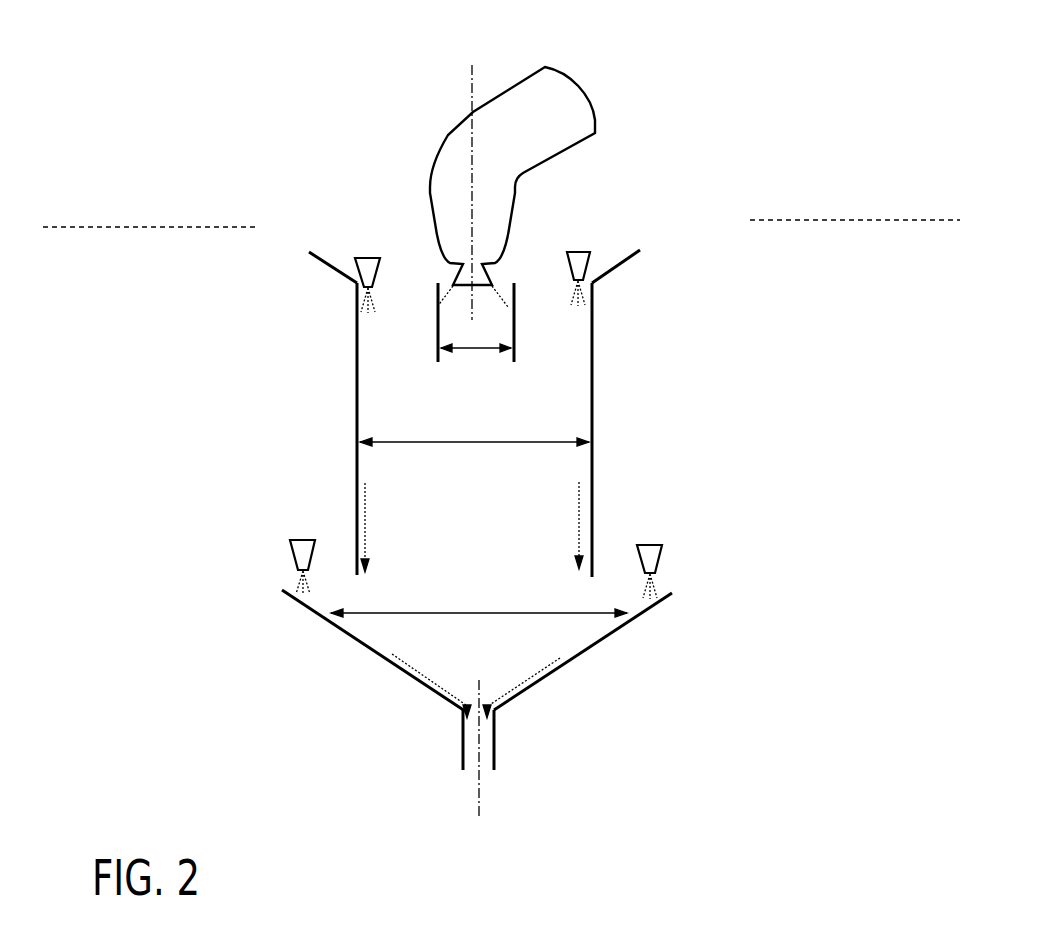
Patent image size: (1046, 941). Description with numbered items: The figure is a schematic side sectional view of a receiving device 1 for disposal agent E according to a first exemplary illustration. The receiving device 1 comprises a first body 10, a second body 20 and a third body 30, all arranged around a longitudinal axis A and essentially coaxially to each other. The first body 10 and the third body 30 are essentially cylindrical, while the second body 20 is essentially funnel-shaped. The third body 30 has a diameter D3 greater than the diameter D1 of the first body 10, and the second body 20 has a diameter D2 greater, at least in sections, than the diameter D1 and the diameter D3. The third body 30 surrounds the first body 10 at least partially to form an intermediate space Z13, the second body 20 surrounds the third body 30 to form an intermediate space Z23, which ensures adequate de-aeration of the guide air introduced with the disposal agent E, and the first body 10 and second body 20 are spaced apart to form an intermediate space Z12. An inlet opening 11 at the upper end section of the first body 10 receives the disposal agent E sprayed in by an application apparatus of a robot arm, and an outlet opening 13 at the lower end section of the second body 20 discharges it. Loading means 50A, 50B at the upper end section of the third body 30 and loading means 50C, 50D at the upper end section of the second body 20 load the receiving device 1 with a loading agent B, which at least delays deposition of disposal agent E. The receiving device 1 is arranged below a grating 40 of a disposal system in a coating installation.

The receiving device 1 is at (296, 130).
The first body 10 is at (425, 318).
The inlet opening 11 is at (443, 281).
The outlet opening 13 is at (490, 760).
The second body 20 is at (330, 642).
The third body 30 is at (607, 390).
The grating 40 is at (145, 217).
The loading means 50A is at (348, 253).
The loading means 50B is at (598, 258).
The loading means 50C is at (667, 553).
The loading means 50D is at (277, 543).
The longitudinal axis A is at (475, 442).
The loading agent B is at (358, 307).
The disposal agent E is at (507, 282).
The diameter of the first body D1 is at (476, 368).
The diameter of the second body D2 is at (479, 631).
The diameter of the third body D3 is at (474, 460).
The intermediate space Z12 is at (487, 418).
The intermediate space Z13 is at (558, 330).
The intermediate space Z23 is at (613, 595).